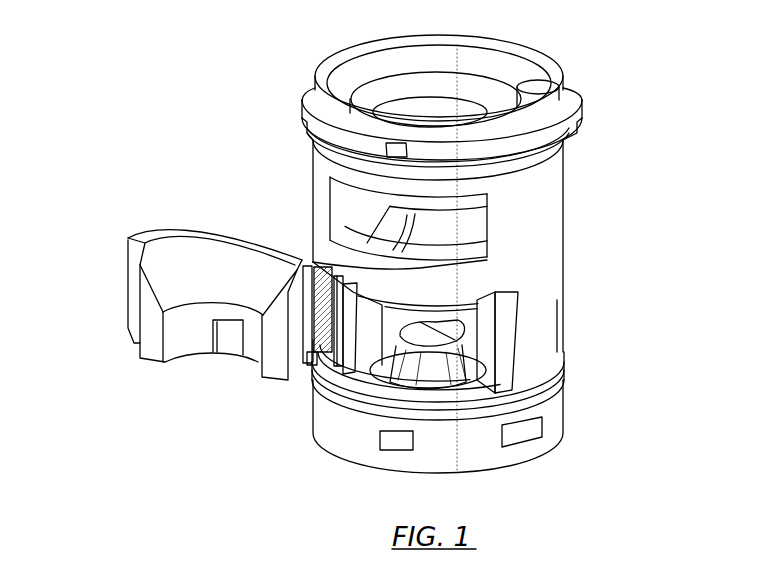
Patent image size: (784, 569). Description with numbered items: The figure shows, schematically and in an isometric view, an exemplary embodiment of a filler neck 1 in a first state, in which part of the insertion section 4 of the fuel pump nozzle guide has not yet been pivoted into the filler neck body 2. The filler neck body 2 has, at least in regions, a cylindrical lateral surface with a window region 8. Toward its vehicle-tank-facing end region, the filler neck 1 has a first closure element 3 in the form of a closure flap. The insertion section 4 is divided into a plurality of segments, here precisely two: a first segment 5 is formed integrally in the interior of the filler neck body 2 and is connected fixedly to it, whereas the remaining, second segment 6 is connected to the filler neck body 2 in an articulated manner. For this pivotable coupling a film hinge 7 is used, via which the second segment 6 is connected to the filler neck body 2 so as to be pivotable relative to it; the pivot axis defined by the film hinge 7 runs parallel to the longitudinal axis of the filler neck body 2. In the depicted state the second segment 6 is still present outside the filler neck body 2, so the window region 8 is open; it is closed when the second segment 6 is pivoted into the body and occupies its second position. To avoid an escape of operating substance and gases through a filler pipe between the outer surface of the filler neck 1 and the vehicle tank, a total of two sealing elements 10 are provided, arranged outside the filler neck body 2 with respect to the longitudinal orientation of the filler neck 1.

The filler neck 1 is at (204, 44).
The filler neck body 2 is at (517, 250).
The first closure element 3 is at (445, 358).
The insertion section 4 is at (705, 260).
The first segment 5 is at (490, 318).
The second segment 6 is at (187, 280).
The film hinge 7 is at (320, 276).
The window region 8 is at (362, 290).
The sealing elements 10 is at (563, 140).